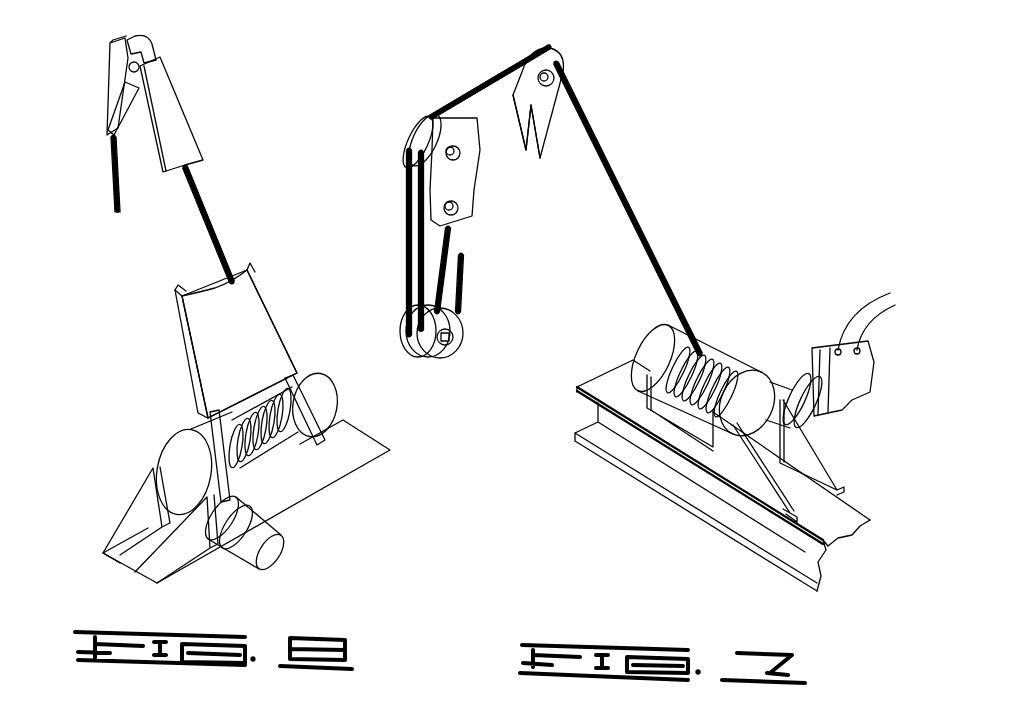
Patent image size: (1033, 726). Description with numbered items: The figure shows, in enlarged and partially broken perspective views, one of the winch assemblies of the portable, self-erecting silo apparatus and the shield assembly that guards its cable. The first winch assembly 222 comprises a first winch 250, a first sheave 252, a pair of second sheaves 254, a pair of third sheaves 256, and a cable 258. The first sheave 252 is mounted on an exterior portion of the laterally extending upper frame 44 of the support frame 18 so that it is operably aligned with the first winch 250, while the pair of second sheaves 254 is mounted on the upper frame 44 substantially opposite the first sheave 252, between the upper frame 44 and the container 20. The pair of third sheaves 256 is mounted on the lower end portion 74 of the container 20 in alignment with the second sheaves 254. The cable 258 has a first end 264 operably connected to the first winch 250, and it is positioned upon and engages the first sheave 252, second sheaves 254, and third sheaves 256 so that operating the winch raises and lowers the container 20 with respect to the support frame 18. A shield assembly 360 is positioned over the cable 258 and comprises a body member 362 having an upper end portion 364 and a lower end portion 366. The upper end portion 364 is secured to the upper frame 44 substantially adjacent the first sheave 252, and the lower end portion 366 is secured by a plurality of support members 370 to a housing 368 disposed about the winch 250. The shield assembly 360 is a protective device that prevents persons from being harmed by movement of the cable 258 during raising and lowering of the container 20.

In FIG. 8, the support frame 18 is at (98, 67).
In FIG. 8, the laterally extending upper frame 44 is at (118, 105).
In FIG. 7, the laterally extending upper frame 44 is at (545, 108).
In FIG. 8, the first sheave 252 is at (150, 44).
In FIG. 7, the first sheave 252 is at (553, 50).
In FIG. 8, the upper end portion 364 is at (160, 85).
In FIG. 8, the cable 258 is at (212, 222).
In FIG. 7, the cable 258 is at (628, 194).
In FIG. 8, the shield assembly 360 is at (245, 300).
In FIG. 8, the body member 362 is at (256, 352).
In FIG. 8, the lower end portion 366 is at (272, 362).
In FIG. 8, the support members 370 is at (297, 392).
In FIG. 8, the first winch assembly 222 is at (345, 407).
In FIG. 7, the first winch assembly 222 is at (640, 143).
In FIG. 8, the first winch 250 is at (333, 423).
In FIG. 7, the first winch 250 is at (723, 370).
In FIG. 8, the housing 368 is at (343, 460).
In FIG. 7, the second sheaves 254 is at (425, 120).
In FIG. 7, the third sheaves 256 is at (447, 363).
In FIG. 7, the container 20 is at (450, 320).
In FIG. 7, the lower end portion 74 is at (458, 325).
In FIG. 7, the first end 264 is at (703, 357).